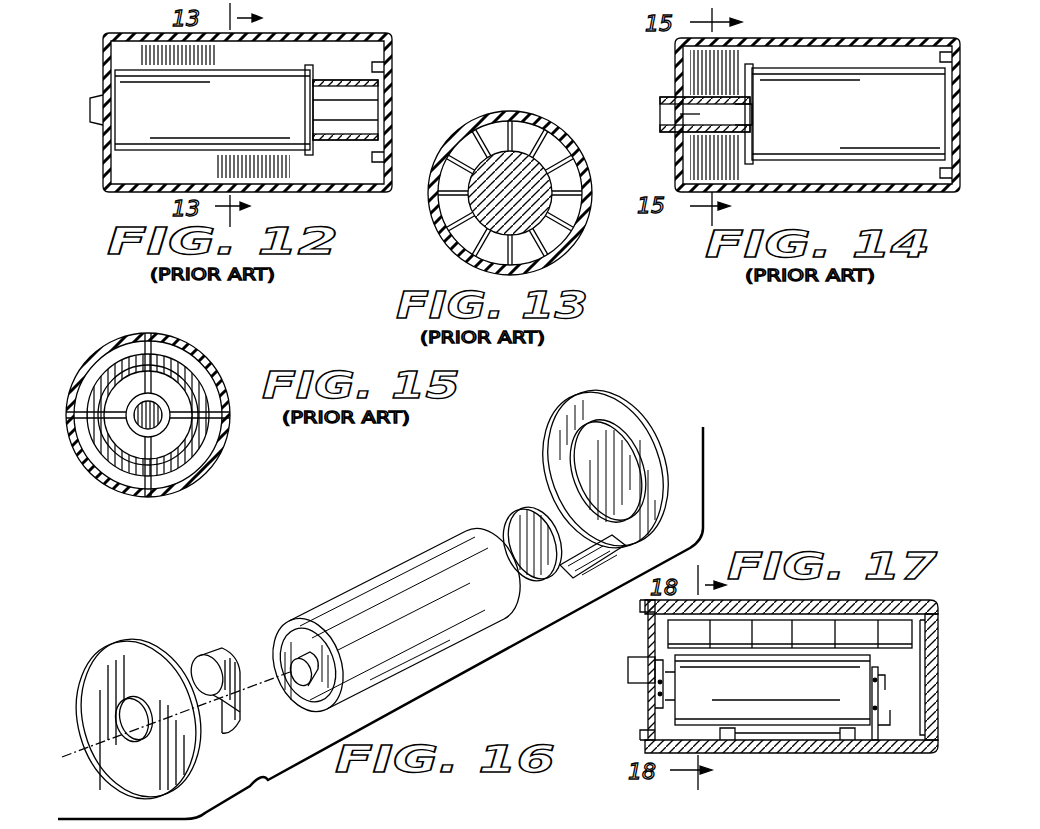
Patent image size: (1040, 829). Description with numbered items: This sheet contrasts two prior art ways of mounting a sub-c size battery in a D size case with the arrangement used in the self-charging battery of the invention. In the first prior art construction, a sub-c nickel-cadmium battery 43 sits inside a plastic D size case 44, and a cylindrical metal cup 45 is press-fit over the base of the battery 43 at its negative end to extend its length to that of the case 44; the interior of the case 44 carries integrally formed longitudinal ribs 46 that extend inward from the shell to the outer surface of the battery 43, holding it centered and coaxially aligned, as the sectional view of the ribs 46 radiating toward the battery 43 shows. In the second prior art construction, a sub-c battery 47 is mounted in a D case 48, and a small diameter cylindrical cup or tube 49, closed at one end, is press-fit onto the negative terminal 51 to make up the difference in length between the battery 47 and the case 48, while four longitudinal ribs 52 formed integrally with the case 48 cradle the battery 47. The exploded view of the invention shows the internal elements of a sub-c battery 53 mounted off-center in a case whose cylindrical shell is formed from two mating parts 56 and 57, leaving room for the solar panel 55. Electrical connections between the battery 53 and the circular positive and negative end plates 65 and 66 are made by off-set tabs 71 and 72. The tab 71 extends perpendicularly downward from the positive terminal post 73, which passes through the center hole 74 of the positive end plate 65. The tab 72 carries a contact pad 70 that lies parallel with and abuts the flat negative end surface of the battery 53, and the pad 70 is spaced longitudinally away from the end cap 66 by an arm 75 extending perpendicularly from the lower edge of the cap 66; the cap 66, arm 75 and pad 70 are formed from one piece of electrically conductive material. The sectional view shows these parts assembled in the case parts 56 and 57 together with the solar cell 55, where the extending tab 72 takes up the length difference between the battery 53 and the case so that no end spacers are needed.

In FIG. 12, the sub-c nickel-cadmium battery 43 is at (178, 142).
In FIG. 13, the sub-c nickel-cadmium battery 43 is at (500, 150).
In FIG. 12, the D size case 44 is at (368, 36).
In FIG. 13, the D size case 44 is at (577, 144).
In FIG. 12, the cylindrical metal cup 45 is at (392, 165).
In FIG. 12, the longitudinal ribs 46 is at (345, 172).
In FIG. 13, the longitudinal ribs 46 is at (546, 130).
In FIG. 14, the sub-c battery 47 is at (868, 115).
In FIG. 15, the sub-c battery 47 is at (176, 376).
In FIG. 14, the D case 48 is at (928, 192).
In FIG. 15, the D case 48 is at (222, 437).
In FIG. 14, the cylindrical cup or tube 49 is at (670, 100).
In FIG. 15, the cylindrical cup or tube 49 is at (132, 428).
In FIG. 14, the negative terminal 51 is at (760, 120).
In FIG. 15, the longitudinal ribs 52 is at (160, 388).
In FIG. 16, the sub-c battery 53 is at (380, 575).
In FIG. 17, the sub-c battery 53 is at (808, 672).
In FIG. 17, the solar panel 55 is at (863, 632).
In FIG. 17, the case part 56 is at (762, 602).
In FIG. 17, the case part 57 is at (762, 753).
In FIG. 16, the positive end plate 65 is at (97, 720).
In FIG. 17, the positive end plate 65 is at (648, 638).
In FIG. 16, the negative end plate 66 is at (622, 432).
In FIG. 17, the negative end plate 66 is at (938, 650).
In FIG. 16, the contact pad 70 is at (508, 515).
In FIG. 16, the off-set tab 71 is at (232, 728).
In FIG. 16, the off-set tab 72 is at (547, 582).
In FIG. 17, the off-set tab 72 is at (900, 732).
In FIG. 16, the positive terminal post 73 is at (205, 654).
In FIG. 17, the positive terminal post 73 is at (628, 678).
In FIG. 16, the center hole 74 is at (125, 740).
In FIG. 17, the center hole 74 is at (880, 722).
In FIG. 16, the arm 75 is at (588, 556).